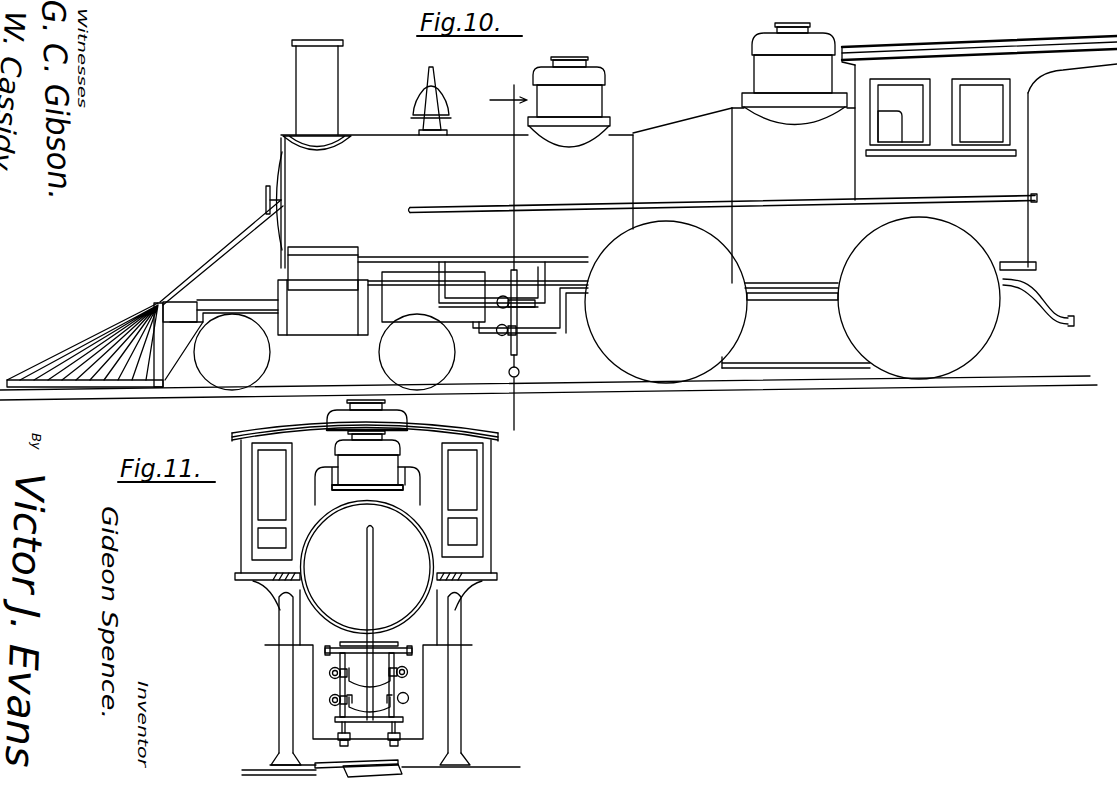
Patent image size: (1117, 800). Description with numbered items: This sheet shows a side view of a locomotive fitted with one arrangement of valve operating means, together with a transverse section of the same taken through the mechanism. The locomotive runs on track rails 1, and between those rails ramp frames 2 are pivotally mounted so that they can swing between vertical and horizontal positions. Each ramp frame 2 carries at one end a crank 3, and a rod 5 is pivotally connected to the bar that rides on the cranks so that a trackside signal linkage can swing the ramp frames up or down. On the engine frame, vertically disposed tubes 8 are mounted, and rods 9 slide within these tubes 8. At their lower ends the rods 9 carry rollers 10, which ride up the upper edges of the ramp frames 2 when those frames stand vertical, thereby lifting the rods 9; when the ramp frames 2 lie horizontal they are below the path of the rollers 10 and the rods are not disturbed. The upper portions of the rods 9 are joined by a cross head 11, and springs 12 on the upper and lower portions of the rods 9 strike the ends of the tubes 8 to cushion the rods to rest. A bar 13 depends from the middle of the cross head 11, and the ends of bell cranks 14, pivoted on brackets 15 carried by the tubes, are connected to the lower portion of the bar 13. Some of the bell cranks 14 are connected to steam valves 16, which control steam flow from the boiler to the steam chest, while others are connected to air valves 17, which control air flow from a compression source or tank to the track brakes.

In FIG. 10, the track rails 1 is at (772, 390).
In FIG. 11, the track rails 1 is at (455, 757).
In FIG. 11, the ramp frames 2 is at (355, 762).
In FIG. 11, the crank 3 is at (404, 771).
In FIG. 11, the rod 5 is at (265, 770).
In FIG. 10, the tubes 8 is at (518, 318).
In FIG. 11, the tubes 8 is at (340, 660).
In FIG. 10, the rods 9 is at (518, 358).
In FIG. 11, the rods 9 is at (392, 726).
In FIG. 10, the rollers 10 is at (518, 377).
In FIG. 11, the rollers 10 is at (392, 743).
In FIG. 10, the cross head 11 is at (508, 255).
In FIG. 11, the cross head 11 is at (381, 644).
In FIG. 11, the springs 12 is at (350, 650).
In FIG. 11, the bar 13 is at (391, 696).
In FIG. 11, the bell cranks 14 is at (388, 683).
In FIG. 11, the brackets 15 is at (334, 715).
In FIG. 10, the steam valves 16 is at (504, 296).
In FIG. 11, the steam valves 16 is at (329, 673).
In FIG. 11, the air valves 17 is at (329, 701).